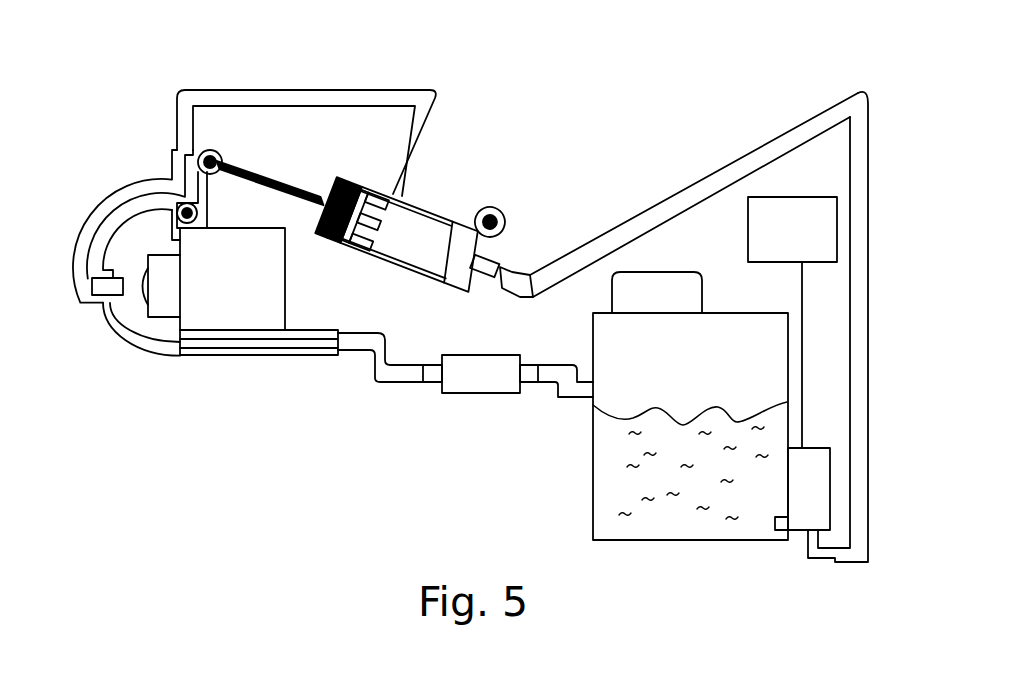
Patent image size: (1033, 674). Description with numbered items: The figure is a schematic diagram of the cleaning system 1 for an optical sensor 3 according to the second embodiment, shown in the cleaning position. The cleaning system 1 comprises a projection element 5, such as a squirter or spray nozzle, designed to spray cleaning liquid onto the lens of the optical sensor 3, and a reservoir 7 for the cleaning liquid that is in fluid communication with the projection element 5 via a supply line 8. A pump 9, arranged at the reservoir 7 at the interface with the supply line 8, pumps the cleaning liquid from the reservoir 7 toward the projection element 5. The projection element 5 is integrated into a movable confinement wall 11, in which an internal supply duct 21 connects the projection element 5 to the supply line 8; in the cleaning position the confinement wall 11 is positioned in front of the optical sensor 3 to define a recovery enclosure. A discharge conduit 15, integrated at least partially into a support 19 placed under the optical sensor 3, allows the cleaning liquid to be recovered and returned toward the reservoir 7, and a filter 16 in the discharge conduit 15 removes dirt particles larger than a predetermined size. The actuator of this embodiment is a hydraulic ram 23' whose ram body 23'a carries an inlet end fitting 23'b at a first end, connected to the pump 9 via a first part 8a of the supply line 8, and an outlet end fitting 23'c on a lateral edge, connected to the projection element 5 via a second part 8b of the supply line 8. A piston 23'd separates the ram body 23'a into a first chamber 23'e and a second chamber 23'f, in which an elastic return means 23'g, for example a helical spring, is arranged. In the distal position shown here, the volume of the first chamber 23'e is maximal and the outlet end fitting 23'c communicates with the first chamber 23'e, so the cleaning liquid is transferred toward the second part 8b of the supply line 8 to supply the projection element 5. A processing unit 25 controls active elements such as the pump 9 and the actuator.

The cleaning system 1 is at (408, 498).
The optical sensor 3 is at (240, 247).
The projection element 5 is at (103, 306).
The reservoir 7 is at (593, 472).
The supply line 8 is at (655, 163).
The first part of the supply line 8a is at (748, 156).
The second part of the supply line 8b is at (294, 100).
The pump 9 is at (810, 457).
The confinement wall 11 is at (113, 320).
The discharge conduit 15 is at (387, 380).
The filter 16 is at (470, 388).
The support 19 is at (233, 353).
The internal supply duct 21 is at (148, 190).
The hydraulic ram 23' is at (386, 205).
The ram body 23'a is at (403, 268).
The inlet end fitting 23'b is at (516, 246).
The outlet end fitting 23'c is at (343, 177).
The piston 23'd is at (370, 252).
The first chamber 23'e is at (484, 220).
The second chamber 23'f is at (331, 246).
The elastic return means 23'g is at (356, 179).
The processing unit 25 is at (792, 322).